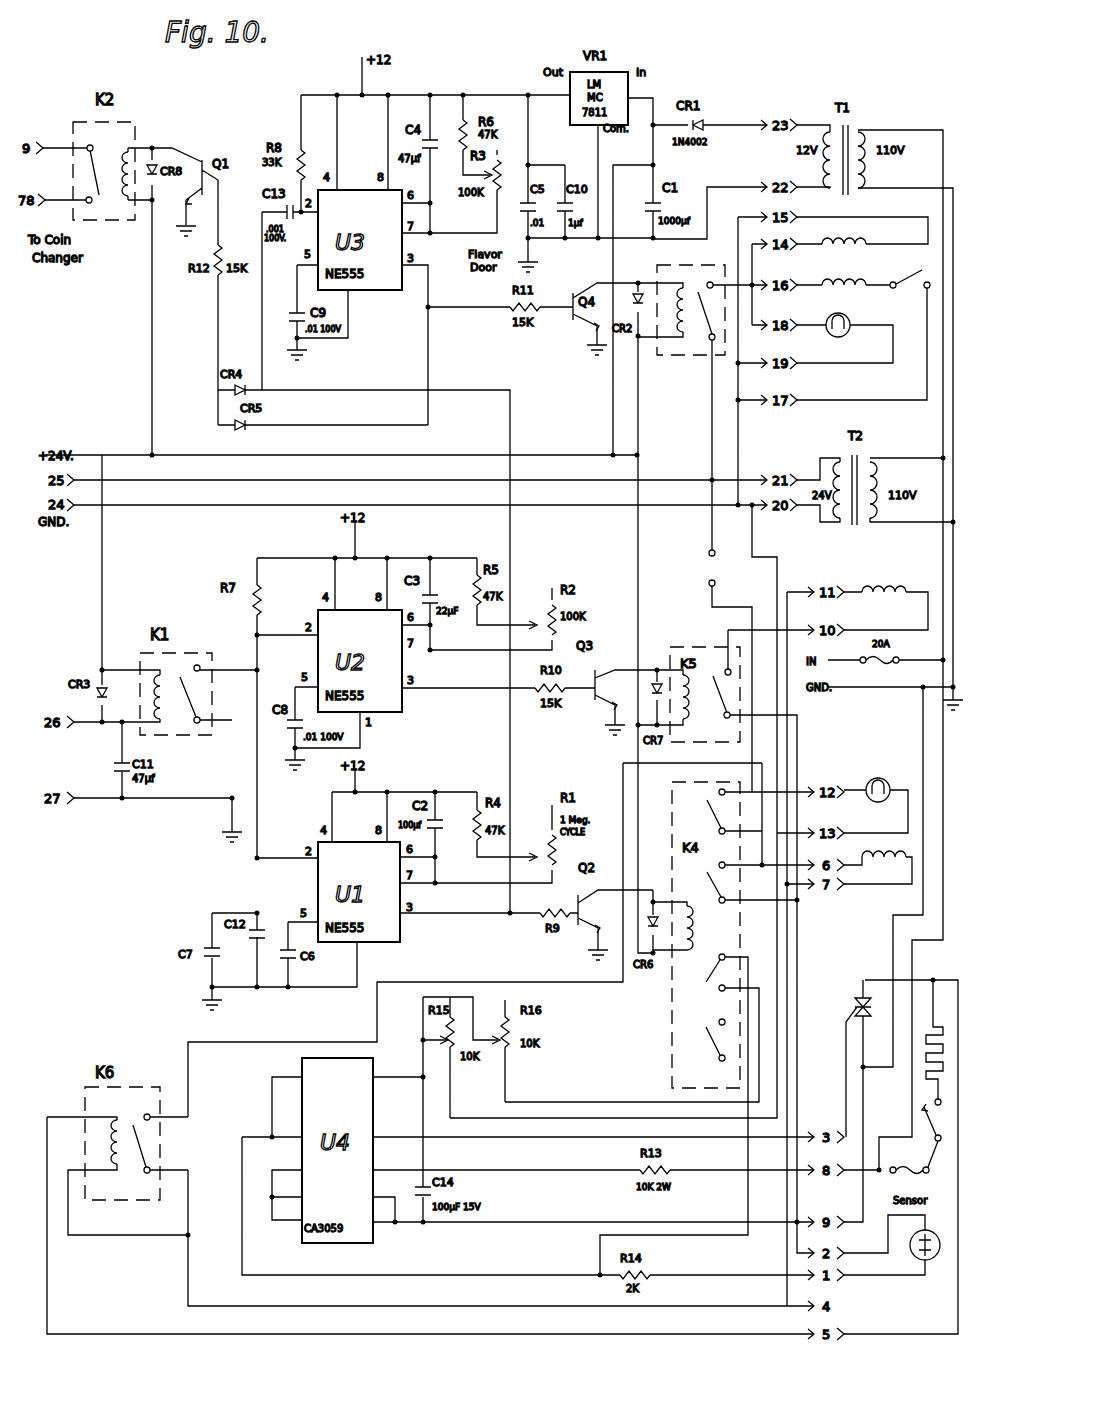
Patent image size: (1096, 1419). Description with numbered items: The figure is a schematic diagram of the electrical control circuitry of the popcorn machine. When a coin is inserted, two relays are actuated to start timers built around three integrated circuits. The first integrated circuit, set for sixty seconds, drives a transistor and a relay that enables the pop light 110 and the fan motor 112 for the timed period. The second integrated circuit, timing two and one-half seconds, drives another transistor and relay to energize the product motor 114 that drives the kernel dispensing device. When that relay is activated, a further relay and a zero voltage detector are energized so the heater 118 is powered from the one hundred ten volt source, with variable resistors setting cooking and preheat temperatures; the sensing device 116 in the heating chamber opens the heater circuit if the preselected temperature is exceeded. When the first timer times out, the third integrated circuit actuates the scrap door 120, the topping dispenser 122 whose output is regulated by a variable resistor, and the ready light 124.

The pop light 110 is at (878, 780).
The fan motor 112 is at (872, 870).
The product motor 114 is at (886, 588).
The sensing device 116 is at (915, 1132).
The heater 118 is at (937, 1021).
The scrap door 120 is at (868, 248).
The topping dispenser 122 is at (866, 282).
The ready light 124 is at (852, 325).